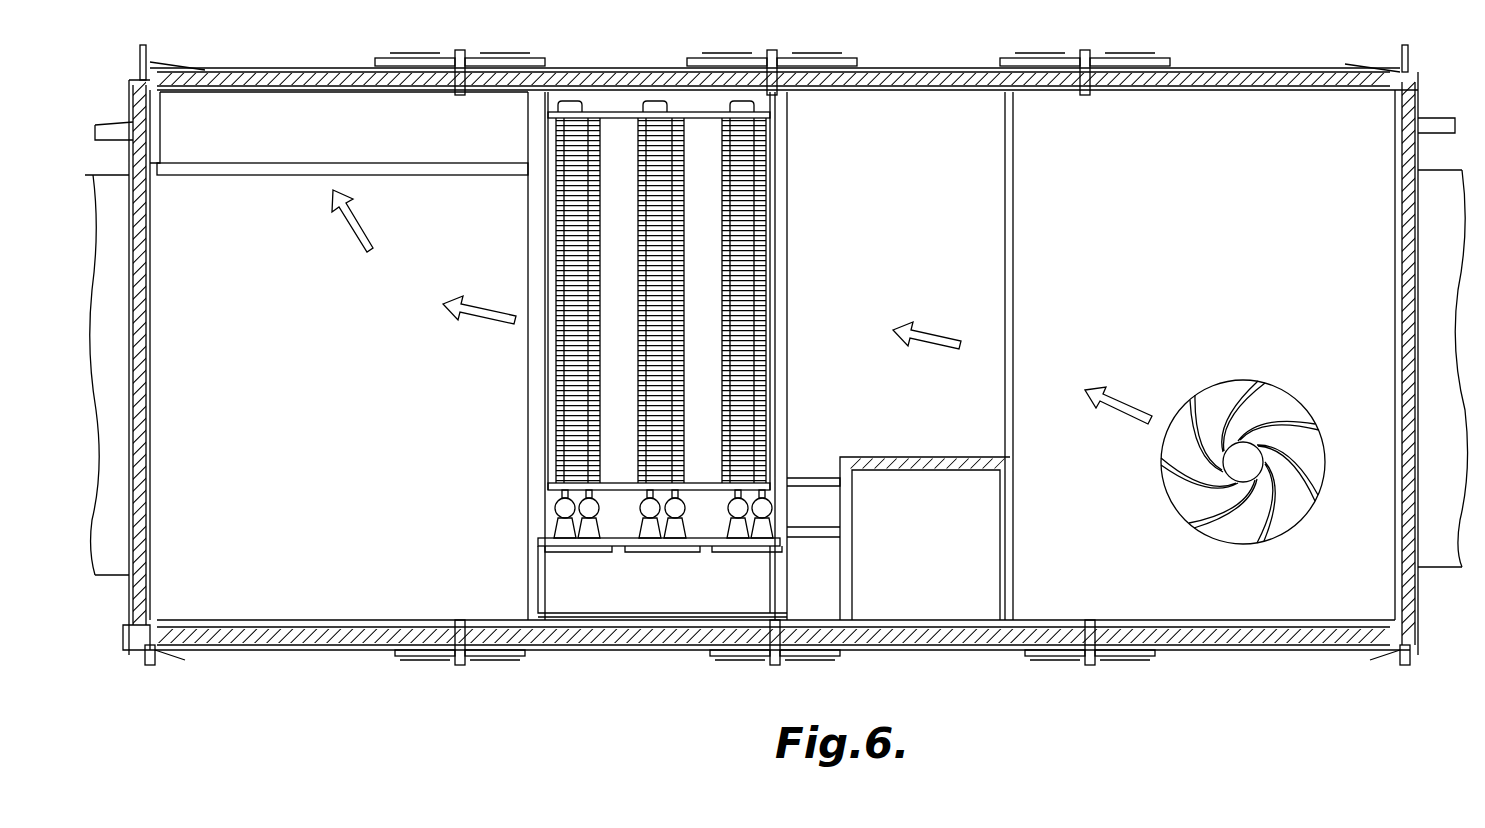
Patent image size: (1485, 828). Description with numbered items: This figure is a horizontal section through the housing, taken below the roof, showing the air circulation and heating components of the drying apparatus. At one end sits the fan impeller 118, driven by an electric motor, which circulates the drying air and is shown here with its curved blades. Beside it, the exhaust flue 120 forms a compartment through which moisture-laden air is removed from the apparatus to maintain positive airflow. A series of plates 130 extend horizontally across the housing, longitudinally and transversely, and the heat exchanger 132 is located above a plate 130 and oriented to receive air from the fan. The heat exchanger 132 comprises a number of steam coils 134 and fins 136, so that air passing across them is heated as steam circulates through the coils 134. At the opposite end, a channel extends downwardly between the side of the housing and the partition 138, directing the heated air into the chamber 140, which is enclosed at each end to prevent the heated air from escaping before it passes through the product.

The fan impeller 118 is at (1310, 477).
The exhaust flue 120 is at (1012, 520).
The plate 130 is at (903, 110).
The heat exchanger 132 is at (626, 326).
The steam coils 134 is at (776, 100).
The fins 136 is at (578, 210).
The partition 138 is at (372, 163).
The chamber 140 is at (305, 110).